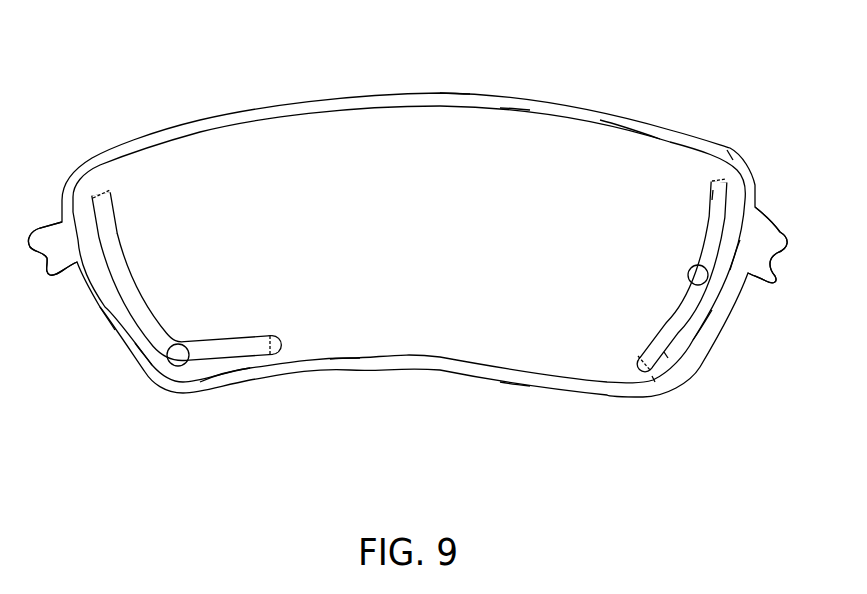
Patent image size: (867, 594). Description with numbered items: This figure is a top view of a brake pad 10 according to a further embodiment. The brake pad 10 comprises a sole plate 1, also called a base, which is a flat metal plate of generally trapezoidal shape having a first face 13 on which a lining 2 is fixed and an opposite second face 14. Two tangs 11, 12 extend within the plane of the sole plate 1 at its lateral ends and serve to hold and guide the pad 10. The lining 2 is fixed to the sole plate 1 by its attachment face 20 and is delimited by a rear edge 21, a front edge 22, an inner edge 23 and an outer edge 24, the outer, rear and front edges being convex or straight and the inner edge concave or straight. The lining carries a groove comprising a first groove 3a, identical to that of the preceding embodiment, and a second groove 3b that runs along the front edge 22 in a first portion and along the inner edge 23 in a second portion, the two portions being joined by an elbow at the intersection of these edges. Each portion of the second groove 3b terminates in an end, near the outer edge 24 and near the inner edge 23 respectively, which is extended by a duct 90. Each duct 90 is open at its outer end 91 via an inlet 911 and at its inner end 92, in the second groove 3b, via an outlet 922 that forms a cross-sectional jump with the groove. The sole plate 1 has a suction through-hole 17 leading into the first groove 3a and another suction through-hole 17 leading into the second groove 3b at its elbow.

The brake pad 10 is at (150, 90).
The sole plate 1 is at (407, 268).
The lining 2 is at (638, 163).
The tang 11 is at (758, 220).
The tang 12 is at (53, 240).
The first face 13 is at (220, 374).
The second face 14 is at (517, 387).
The suction through-hole 17 is at (178, 353).
The attachment face 20 is at (507, 144).
The rear edge 21 is at (707, 320).
The front edge 22 is at (112, 322).
The inner edge 23 is at (347, 357).
The outer edge 24 is at (457, 110).
The first groove 3a is at (743, 290).
The second groove 3b is at (126, 394).
The duct 90 is at (97, 181).
The outer end 91 is at (99, 192).
The inner end 92 is at (109, 192).
The inlet 911 is at (730, 150).
The outlet 922 is at (716, 192).